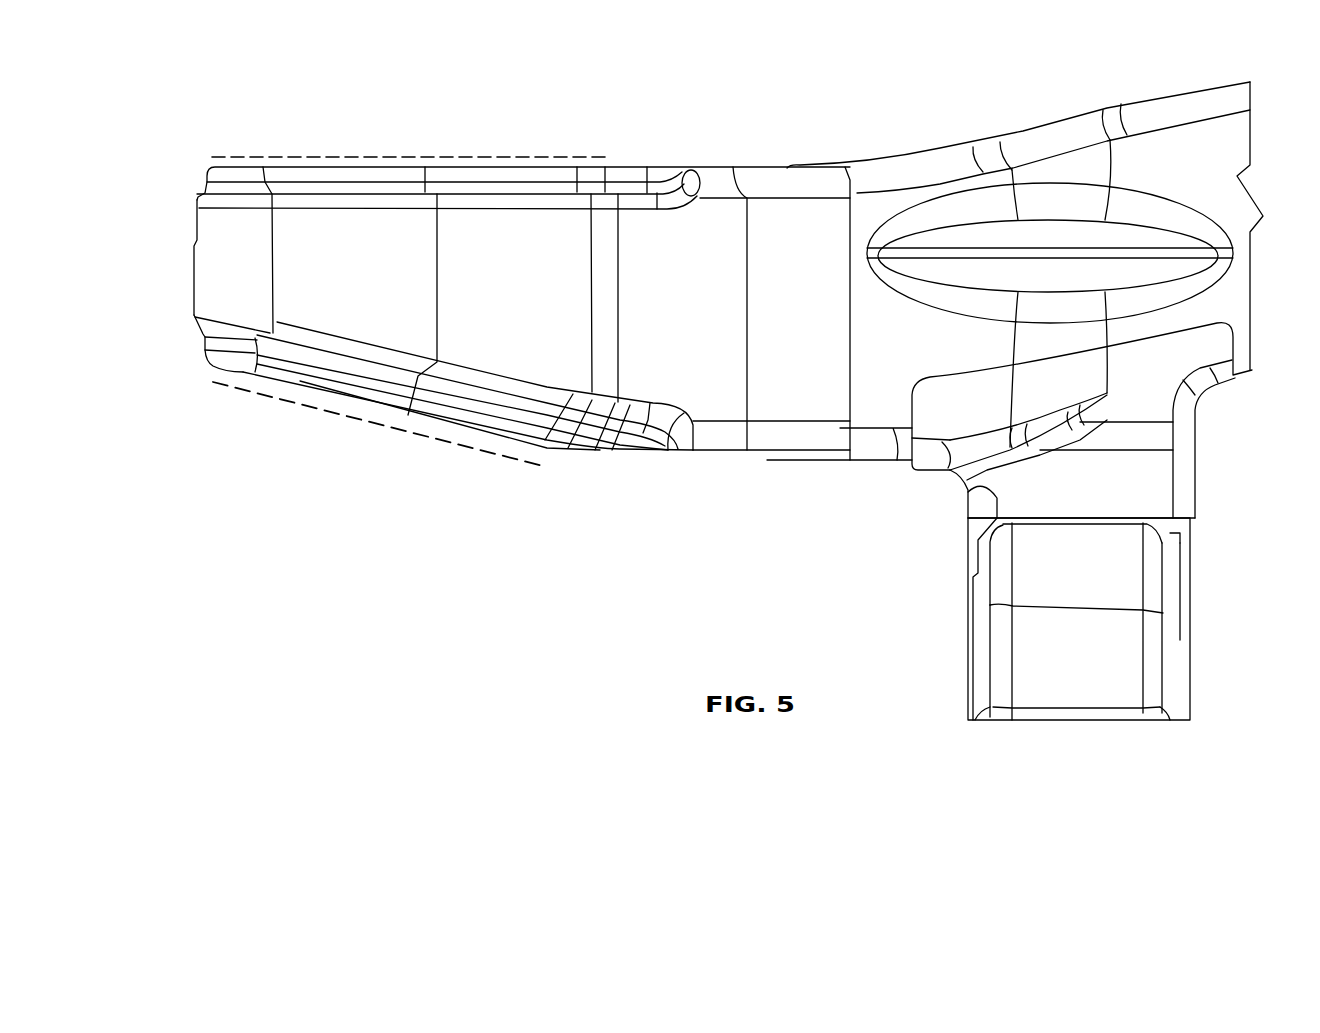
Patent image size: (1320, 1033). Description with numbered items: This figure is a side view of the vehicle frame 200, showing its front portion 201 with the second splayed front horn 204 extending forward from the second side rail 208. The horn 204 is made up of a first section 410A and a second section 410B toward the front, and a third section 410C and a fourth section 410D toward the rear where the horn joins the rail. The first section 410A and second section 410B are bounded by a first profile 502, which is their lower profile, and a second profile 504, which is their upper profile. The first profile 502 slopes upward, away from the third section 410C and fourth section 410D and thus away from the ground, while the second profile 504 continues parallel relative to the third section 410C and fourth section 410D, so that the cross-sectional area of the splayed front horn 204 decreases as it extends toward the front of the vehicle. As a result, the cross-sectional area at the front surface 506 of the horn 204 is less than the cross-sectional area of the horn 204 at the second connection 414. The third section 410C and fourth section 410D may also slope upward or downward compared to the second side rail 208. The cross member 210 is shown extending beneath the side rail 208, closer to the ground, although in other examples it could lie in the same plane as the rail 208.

The vehicle frame 200 is at (1217, 83).
The front portion 201 is at (958, 146).
The second splayed front horn 204 is at (202, 195).
The second side rail 208 is at (1123, 102).
The cross member 210 is at (1190, 600).
The second connection 414 is at (847, 268).
The first profile 502 is at (347, 413).
The second profile 504 is at (425, 155).
The front surface 506 is at (195, 248).
The first section 410A is at (192, 306).
The second section 410B is at (503, 438).
The third section 410C is at (648, 452).
The fourth section 410D is at (807, 458).